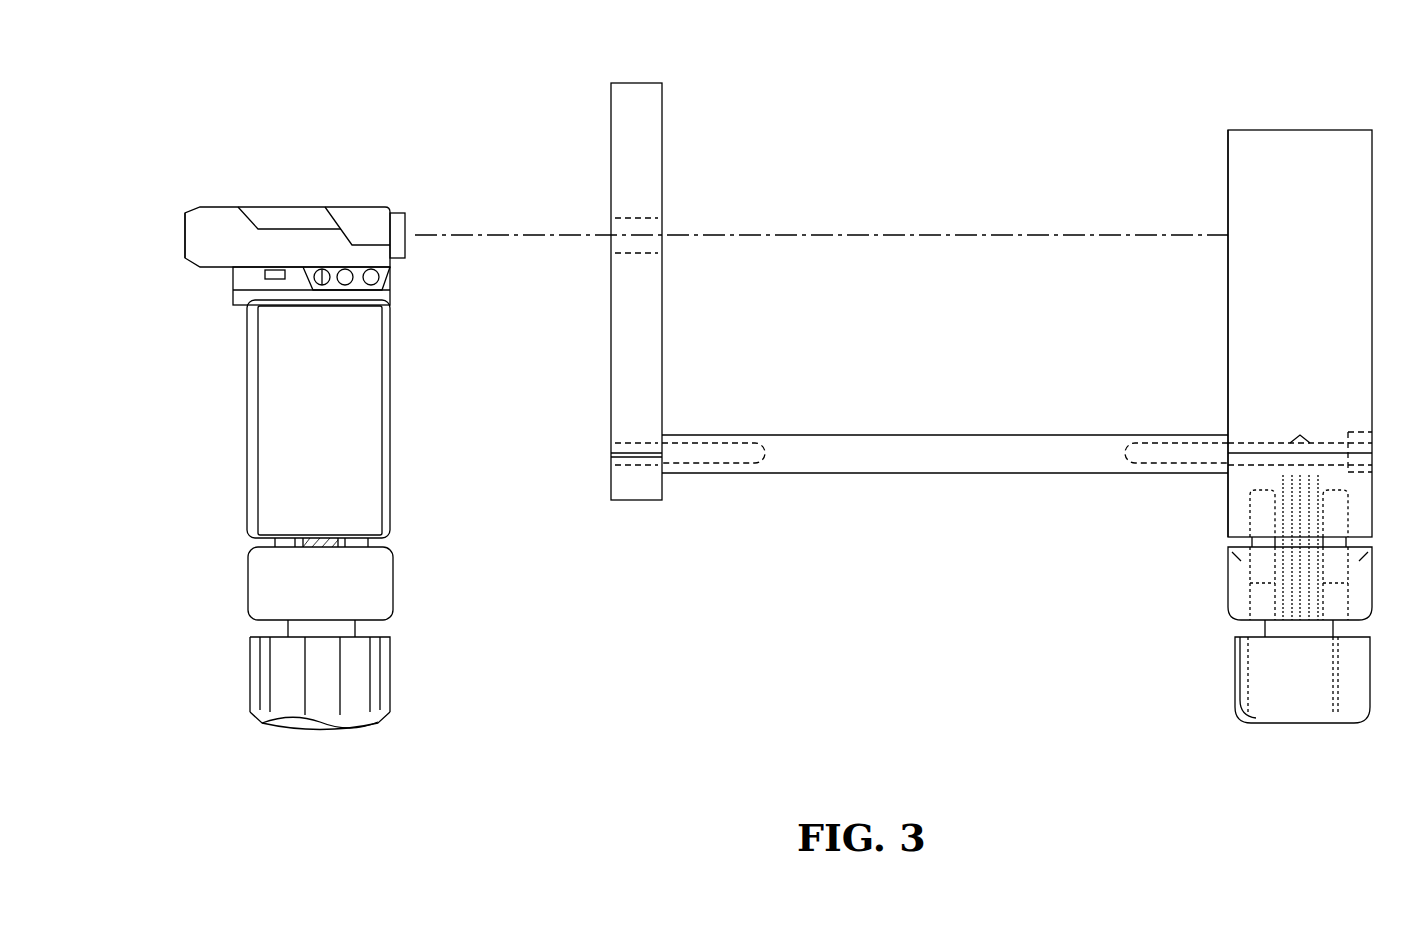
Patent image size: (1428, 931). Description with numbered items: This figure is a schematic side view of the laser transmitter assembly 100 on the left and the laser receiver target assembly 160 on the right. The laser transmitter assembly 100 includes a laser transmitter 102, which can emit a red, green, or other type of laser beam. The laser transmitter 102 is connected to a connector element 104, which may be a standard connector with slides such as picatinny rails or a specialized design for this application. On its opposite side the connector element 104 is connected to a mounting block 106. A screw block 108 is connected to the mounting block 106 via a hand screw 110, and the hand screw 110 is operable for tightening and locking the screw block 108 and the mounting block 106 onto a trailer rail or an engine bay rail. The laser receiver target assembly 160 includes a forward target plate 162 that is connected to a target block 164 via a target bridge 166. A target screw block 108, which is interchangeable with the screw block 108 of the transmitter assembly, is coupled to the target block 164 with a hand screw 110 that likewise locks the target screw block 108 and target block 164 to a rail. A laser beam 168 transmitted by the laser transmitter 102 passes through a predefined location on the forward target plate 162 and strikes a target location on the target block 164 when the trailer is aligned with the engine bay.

The laser transmitter assembly 100 is at (203, 186).
The laser transmitter 102 is at (368, 228).
The connector element 104 is at (390, 282).
The mounting block 106 is at (390, 445).
The screw block 108 is at (393, 580).
The hand screw 110 is at (390, 695).
The laser receiver target assembly 160 is at (1116, 86).
The forward target plate 162 is at (640, 115).
The target block 164 is at (1320, 143).
The target bridge 166 is at (900, 473).
The laser beam 168 is at (780, 236).